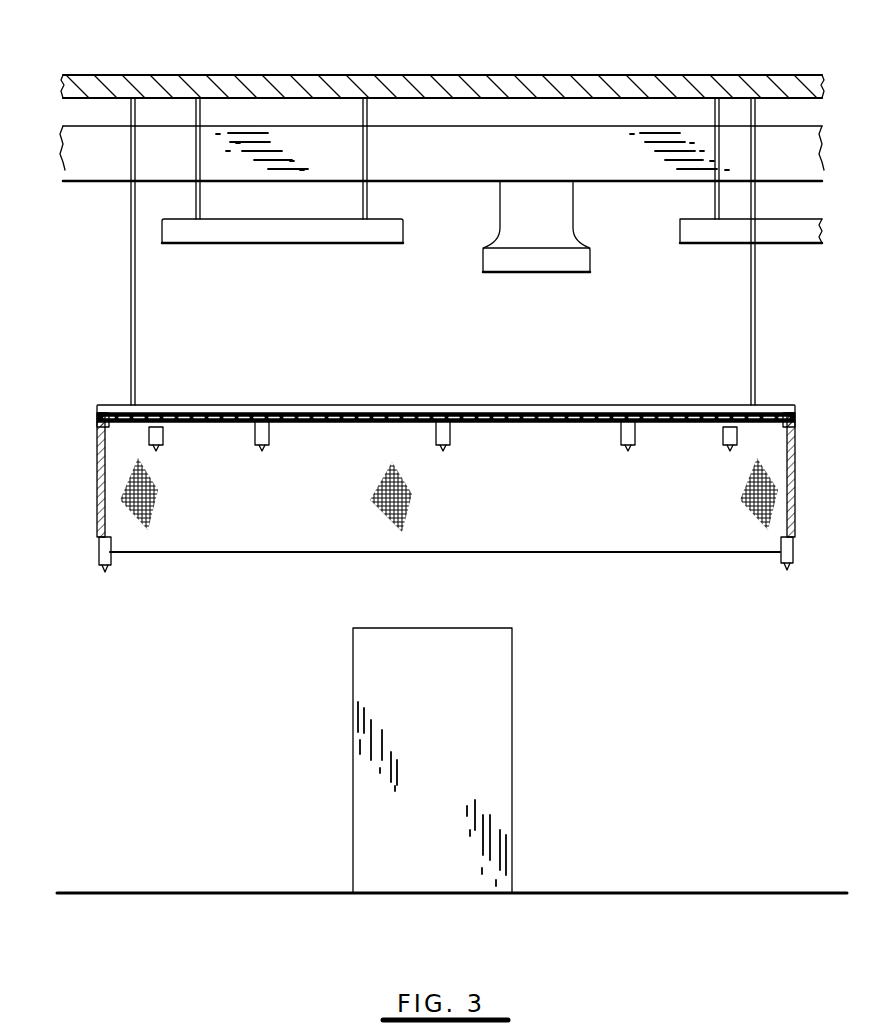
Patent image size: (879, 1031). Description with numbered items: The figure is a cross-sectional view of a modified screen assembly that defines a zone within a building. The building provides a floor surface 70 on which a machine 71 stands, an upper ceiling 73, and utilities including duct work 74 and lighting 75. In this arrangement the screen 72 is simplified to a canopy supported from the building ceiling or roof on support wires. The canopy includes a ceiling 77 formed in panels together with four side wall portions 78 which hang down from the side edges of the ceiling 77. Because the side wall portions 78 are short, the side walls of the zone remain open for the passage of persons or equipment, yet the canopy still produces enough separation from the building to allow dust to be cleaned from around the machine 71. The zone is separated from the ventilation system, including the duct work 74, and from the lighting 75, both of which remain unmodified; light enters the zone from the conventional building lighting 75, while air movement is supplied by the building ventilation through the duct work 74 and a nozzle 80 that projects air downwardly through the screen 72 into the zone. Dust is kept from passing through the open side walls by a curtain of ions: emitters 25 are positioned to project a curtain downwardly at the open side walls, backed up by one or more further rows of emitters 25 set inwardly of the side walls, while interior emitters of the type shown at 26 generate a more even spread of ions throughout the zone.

The upper ceiling 73 is at (505, 70).
The duct work 74 is at (420, 152).
The lighting 75 is at (295, 237).
The nozzle 80 is at (536, 270).
The screen 72 is at (502, 402).
The ceiling 77 is at (344, 406).
The side wall portions 78 is at (96, 492).
The emitters 25 is at (167, 448).
The interior emitters 26 is at (270, 446).
The machine 71 is at (486, 730).
The floor surface 70 is at (620, 892).